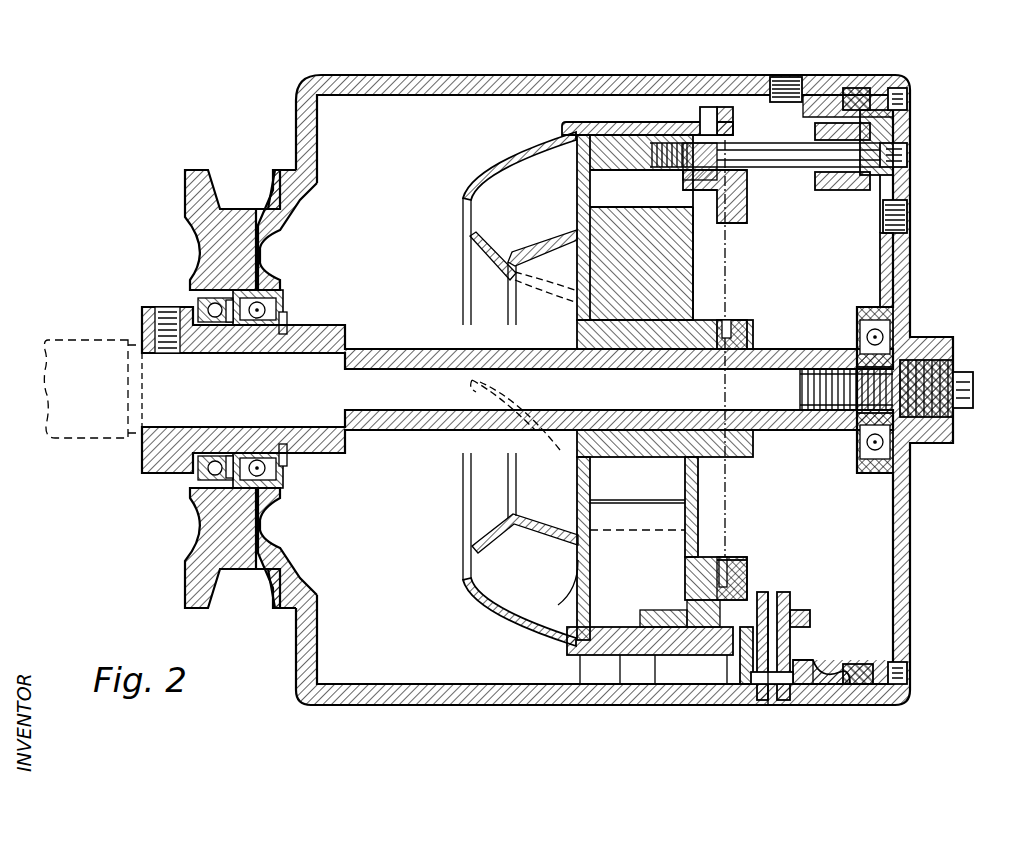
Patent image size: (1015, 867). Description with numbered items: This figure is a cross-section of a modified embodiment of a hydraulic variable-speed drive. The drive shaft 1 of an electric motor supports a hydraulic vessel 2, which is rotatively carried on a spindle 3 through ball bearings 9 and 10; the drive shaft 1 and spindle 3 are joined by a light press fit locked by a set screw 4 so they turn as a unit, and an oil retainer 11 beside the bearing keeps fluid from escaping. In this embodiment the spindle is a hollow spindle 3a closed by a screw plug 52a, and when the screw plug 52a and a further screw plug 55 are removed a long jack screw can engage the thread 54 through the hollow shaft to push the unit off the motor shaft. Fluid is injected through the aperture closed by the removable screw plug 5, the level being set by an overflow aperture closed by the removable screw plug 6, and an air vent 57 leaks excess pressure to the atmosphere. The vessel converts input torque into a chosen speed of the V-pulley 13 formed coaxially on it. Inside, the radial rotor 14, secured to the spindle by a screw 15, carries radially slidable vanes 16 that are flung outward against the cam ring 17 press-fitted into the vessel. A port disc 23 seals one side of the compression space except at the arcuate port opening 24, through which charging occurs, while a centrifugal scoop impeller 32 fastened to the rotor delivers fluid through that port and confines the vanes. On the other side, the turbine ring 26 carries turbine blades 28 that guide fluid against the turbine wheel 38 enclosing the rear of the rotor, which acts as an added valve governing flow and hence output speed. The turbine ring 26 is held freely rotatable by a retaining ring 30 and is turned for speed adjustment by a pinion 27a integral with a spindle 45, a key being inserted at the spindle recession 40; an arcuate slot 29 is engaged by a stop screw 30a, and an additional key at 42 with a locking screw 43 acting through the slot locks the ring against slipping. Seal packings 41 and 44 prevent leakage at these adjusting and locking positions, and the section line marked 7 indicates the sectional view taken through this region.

The drive shaft 1 is at (100, 338).
The hydraulic vessel 2 is at (322, 705).
The spindle 3 is at (569, 47).
The hollow spindle 3a is at (142, 462).
The set screw 4 is at (167, 305).
The removable screw plug 5 is at (795, 81).
The removable screw plug 6 is at (908, 215).
The section line 7- 7 is at (743, 140).
The ball bearing 9 is at (288, 266).
The ball bearing 10 is at (905, 300).
The oil retainer 11 is at (250, 300).
The V-pulley 13 is at (228, 170).
The radial rotor 14 is at (672, 264).
The screw 15 is at (732, 320).
The vanes 16 is at (610, 500).
The cam ring 17 is at (575, 645).
The port disc 23 is at (578, 176).
The arcuate port opening 24 is at (562, 592).
The turbine ring 26 is at (727, 558).
The pinion 27a is at (797, 625).
The turbine blades 28 is at (700, 236).
The arcuate slot 29 is at (740, 222).
The retaining ring 30 is at (735, 127).
The stop screw 30a is at (705, 118).
The centrifugal scoop impeller 32 is at (484, 257).
The turbine wheel 38 is at (752, 185).
The spindle recession 40 is at (766, 705).
The seal packing 41 is at (785, 660).
The key 42 is at (907, 155).
The locking screw 43 is at (850, 95).
The seal packing 44 is at (840, 135).
The spindle 45 is at (810, 630).
The screw plug 52a is at (860, 430).
The thread 54 is at (800, 393).
The screw plug 55 is at (958, 360).
The air vent 57 is at (973, 392).